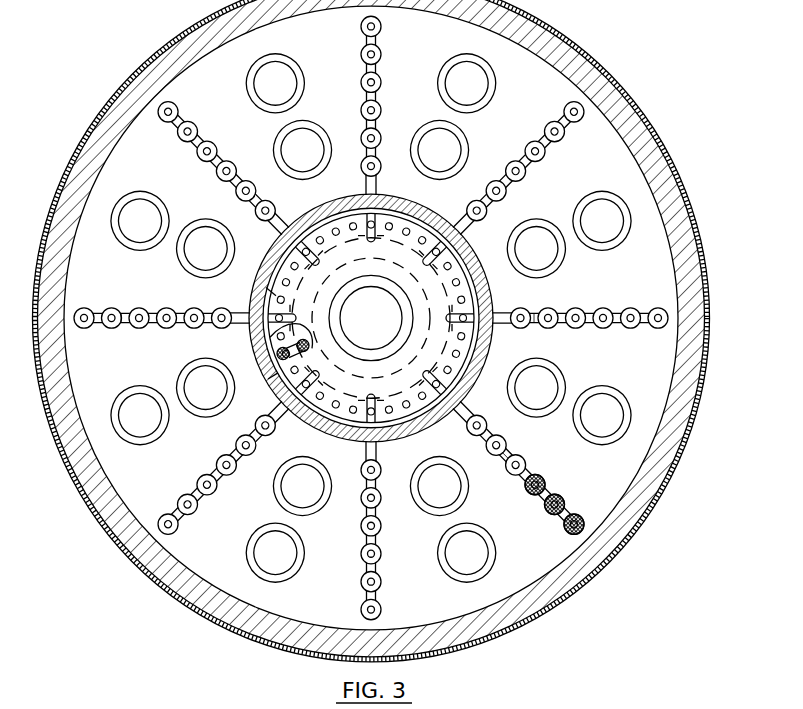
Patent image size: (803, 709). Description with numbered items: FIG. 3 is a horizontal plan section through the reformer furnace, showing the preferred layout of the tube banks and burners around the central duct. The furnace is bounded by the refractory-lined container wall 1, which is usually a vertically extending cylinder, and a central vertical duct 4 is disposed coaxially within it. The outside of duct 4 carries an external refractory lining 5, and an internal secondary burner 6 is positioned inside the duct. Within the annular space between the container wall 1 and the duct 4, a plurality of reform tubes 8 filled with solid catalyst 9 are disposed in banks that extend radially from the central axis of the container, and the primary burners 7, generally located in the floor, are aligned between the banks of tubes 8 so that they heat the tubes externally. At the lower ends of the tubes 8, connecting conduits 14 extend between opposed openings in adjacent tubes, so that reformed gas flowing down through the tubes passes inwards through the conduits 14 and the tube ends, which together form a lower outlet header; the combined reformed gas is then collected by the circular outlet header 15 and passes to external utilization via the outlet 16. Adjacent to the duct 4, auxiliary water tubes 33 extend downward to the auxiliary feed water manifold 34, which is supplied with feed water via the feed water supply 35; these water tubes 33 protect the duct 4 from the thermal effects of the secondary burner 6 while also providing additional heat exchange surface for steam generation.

The container wall 1 is at (533, 17).
The central vertical duct 4 is at (464, 243).
The external refractory lining 5 is at (491, 284).
The internal secondary burner 6 is at (349, 320).
The primary burners 7 is at (580, 226).
The reform tubes 8 is at (510, 186).
The solid catalyst 9 is at (546, 488).
The connecting conduits 14 is at (125, 315).
The circular outlet header 15 is at (315, 279).
The outlet for external utilization 16 is at (305, 337).
The auxiliary water tubes 33 is at (267, 344).
The auxiliary feed water manifold 34 is at (274, 293).
The feed water supply 35 is at (271, 378).